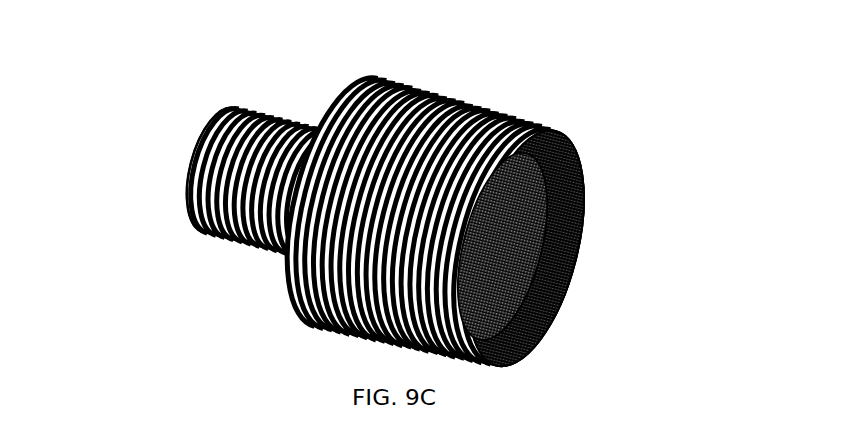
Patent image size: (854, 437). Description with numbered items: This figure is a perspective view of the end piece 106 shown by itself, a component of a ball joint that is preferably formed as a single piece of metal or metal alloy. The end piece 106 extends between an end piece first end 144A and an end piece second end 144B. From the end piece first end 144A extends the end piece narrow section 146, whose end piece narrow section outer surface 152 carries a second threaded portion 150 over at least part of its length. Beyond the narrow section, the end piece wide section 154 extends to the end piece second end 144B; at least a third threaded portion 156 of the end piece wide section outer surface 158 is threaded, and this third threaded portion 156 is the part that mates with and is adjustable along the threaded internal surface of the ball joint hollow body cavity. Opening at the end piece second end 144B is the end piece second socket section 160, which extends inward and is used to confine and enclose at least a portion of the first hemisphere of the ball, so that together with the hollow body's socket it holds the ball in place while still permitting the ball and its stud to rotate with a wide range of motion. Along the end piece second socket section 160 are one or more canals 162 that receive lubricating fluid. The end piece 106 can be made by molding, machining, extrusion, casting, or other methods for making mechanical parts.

The end piece 106 is at (387, 215).
The end piece first end 144A is at (185, 178).
The end piece second end 144B is at (568, 142).
The end piece narrow section 146 is at (272, 135).
The second threaded portion 150 is at (222, 220).
The end piece narrow section outer surface 152 is at (232, 127).
The end piece wide section 154 is at (415, 272).
The third threaded portion 156 is at (445, 120).
The end piece wide section outer surface 158 is at (363, 280).
The end piece second socket section 160 is at (513, 248).
The canals 162 is at (515, 302).